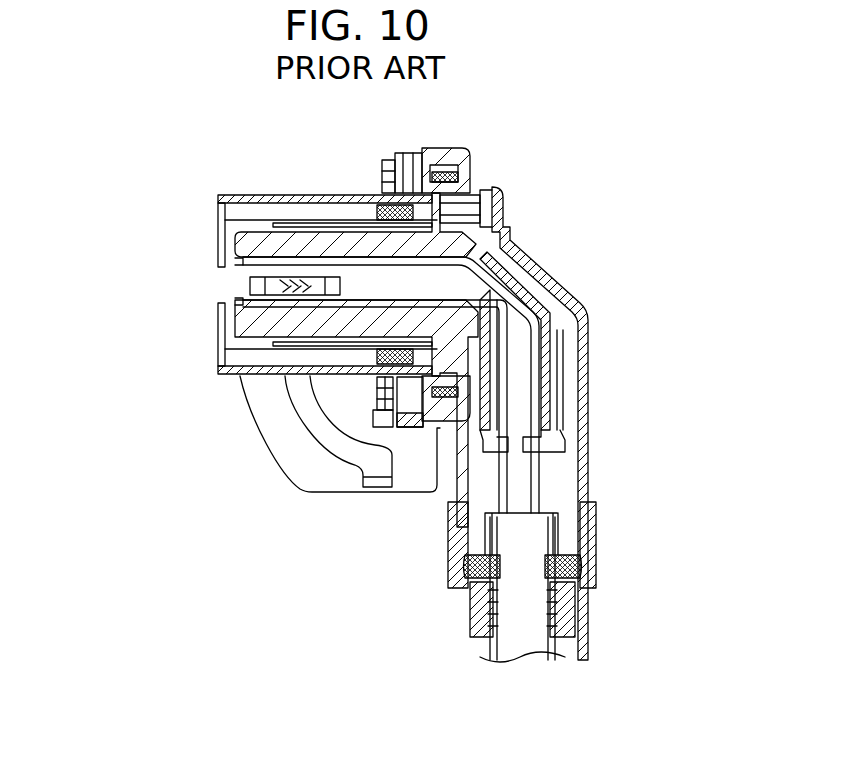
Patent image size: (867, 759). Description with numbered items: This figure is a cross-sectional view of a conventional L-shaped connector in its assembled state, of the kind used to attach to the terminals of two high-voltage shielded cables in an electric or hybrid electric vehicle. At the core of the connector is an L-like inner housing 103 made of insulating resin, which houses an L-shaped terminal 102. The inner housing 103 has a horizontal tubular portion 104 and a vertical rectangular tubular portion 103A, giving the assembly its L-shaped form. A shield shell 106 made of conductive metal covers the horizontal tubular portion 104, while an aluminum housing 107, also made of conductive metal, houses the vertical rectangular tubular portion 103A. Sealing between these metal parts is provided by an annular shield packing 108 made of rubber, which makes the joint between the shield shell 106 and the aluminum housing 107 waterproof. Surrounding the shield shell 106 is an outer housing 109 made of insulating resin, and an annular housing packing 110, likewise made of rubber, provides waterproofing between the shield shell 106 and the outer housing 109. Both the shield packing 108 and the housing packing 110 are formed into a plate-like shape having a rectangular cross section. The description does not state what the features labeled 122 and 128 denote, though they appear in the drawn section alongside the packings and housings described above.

The L-shaped terminal 102 is at (313, 258).
The inner housing 103 is at (256, 232).
The vertical rectangular tubular portion 103A is at (548, 382).
The horizontal tubular portion 104 is at (282, 230).
The shield shell 106 is at (330, 222).
The aluminum housing 107 is at (502, 192).
The shield packing 108 is at (470, 192).
The outer housing 109 is at (218, 195).
The housing packing 110 is at (388, 210).
The top plate 122 is at (230, 196).
The seal 128 is at (353, 214).